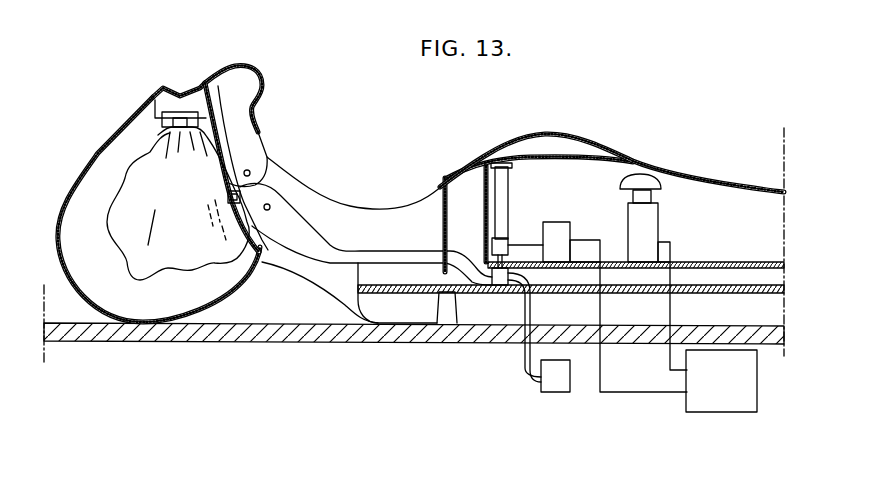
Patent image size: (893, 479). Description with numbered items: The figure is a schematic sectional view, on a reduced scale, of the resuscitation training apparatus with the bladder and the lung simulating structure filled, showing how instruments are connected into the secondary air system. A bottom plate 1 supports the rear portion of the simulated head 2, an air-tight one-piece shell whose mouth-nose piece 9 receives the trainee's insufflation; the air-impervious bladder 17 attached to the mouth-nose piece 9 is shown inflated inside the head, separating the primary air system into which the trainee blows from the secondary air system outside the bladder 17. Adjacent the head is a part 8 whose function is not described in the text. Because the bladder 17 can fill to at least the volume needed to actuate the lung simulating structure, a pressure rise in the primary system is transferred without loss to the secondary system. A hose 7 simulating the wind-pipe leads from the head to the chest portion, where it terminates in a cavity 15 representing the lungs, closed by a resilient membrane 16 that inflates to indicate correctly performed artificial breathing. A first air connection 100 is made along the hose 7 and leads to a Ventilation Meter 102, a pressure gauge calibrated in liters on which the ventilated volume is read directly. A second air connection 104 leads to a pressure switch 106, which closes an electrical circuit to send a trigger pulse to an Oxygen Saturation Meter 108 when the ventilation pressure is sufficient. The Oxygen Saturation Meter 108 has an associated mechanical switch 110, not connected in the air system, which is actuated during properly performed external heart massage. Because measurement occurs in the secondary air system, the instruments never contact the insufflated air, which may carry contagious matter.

The bottom plate 1 is at (278, 342).
The simulated head 2 is at (100, 155).
The hose 7 is at (415, 250).
The support plate with strap 8 is at (263, 95).
The mouth-nose piece 9 is at (161, 87).
The cavity 15 is at (537, 150).
The resilient membrane 16 is at (478, 158).
The bladder 17 is at (135, 268).
The first air connection 100 is at (527, 353).
The Ventilation Meter 102 is at (548, 391).
The second air connection 104 is at (521, 243).
The pressure switch 106 is at (556, 222).
The Oxygen Saturation Meter 108 is at (720, 407).
The mechanical switch 110 is at (652, 217).